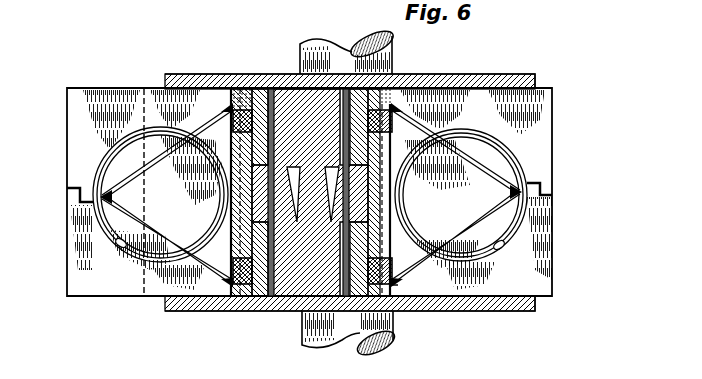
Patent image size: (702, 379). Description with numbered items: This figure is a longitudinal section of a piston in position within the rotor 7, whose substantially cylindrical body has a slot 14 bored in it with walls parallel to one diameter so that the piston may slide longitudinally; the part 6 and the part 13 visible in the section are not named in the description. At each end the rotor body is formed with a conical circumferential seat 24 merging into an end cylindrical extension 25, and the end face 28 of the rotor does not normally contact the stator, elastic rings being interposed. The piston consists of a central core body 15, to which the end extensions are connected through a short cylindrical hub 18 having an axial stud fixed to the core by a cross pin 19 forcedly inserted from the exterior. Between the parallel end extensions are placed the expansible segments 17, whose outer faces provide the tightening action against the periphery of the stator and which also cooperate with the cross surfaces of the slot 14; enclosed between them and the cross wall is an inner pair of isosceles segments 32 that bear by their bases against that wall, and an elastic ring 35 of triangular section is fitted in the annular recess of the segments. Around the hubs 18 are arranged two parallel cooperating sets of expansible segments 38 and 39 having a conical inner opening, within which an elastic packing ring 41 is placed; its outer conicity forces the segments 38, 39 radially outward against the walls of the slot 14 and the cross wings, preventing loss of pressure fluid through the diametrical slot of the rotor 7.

The shaft 6 is at (392, 62).
The rotor 7 is at (506, 80).
The lower bearing 13 is at (397, 285).
The slot 14 is at (498, 310).
The piston body 15 is at (300, 103).
The expansible segments 17 is at (106, 97).
The cylindrical hub 18 is at (236, 108).
The cross pin 19 is at (270, 90).
The conical circumferential seat 24 is at (542, 301).
The end cylindrical extension 25 is at (537, 82).
The end face 28 is at (168, 76).
The inner segments 32 is at (457, 163).
The elastic ring 35 is at (94, 170).
The expansible segments 38 is at (256, 288).
The expansible segments 39 is at (237, 293).
The elastic packing ring 41 is at (398, 302).